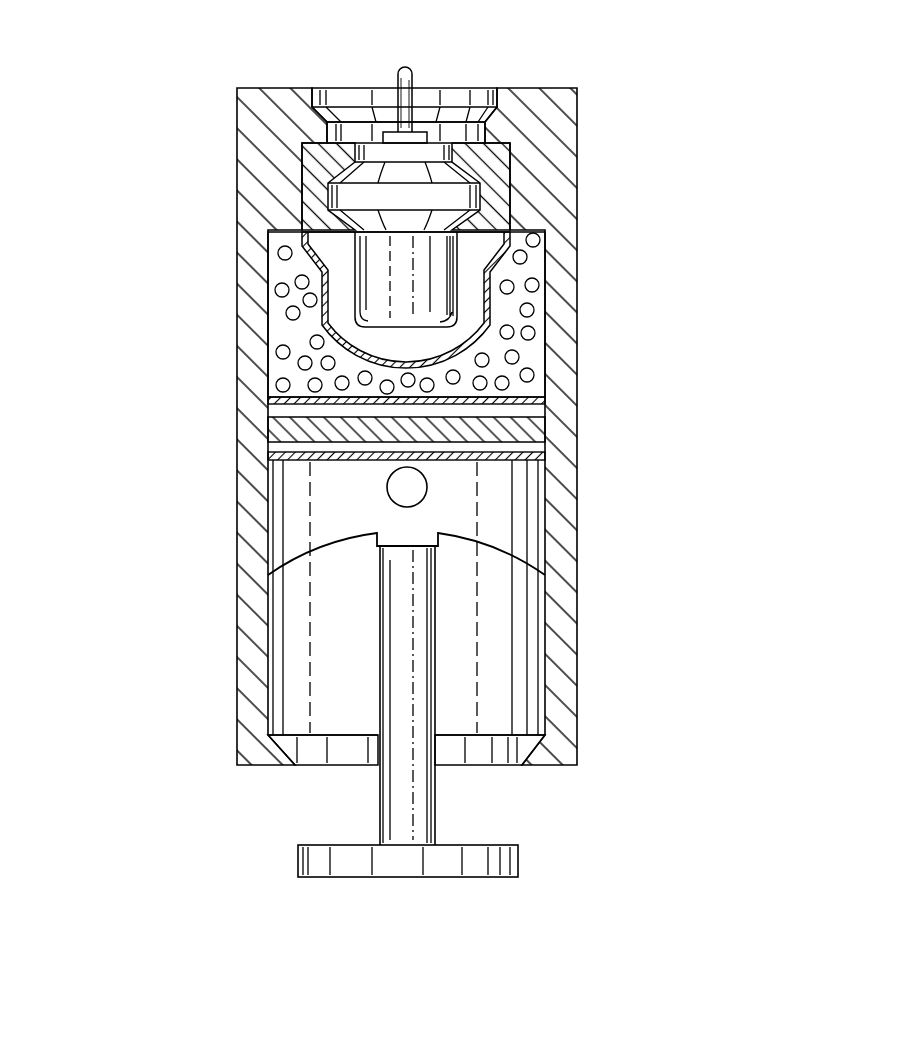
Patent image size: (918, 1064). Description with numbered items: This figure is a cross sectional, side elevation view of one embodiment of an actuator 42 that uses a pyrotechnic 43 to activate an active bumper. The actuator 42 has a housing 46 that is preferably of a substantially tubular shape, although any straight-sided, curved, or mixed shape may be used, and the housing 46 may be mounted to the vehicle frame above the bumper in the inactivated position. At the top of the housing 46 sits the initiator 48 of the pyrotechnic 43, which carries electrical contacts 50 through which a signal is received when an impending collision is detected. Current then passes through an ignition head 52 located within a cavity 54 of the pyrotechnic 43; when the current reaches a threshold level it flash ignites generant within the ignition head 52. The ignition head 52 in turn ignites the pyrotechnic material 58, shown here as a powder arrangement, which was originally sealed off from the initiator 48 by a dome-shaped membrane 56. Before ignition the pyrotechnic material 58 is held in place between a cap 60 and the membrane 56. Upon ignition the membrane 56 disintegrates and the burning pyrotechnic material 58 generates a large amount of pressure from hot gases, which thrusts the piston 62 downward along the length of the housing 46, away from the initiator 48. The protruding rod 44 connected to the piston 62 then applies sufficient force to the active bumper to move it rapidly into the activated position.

The actuator 42 is at (622, 116).
The pyrotechnic 43 is at (226, 258).
The rod 44 is at (425, 807).
The housing 46 is at (577, 197).
The initiator 48 is at (316, 179).
The electrical contacts 50 is at (403, 66).
The ignition head 52 is at (430, 289).
The cavity 54 is at (358, 338).
The membrane 56 is at (487, 343).
The pyrotechnic material 58 is at (283, 370).
The cap 60 is at (513, 390).
The piston 62 is at (296, 510).